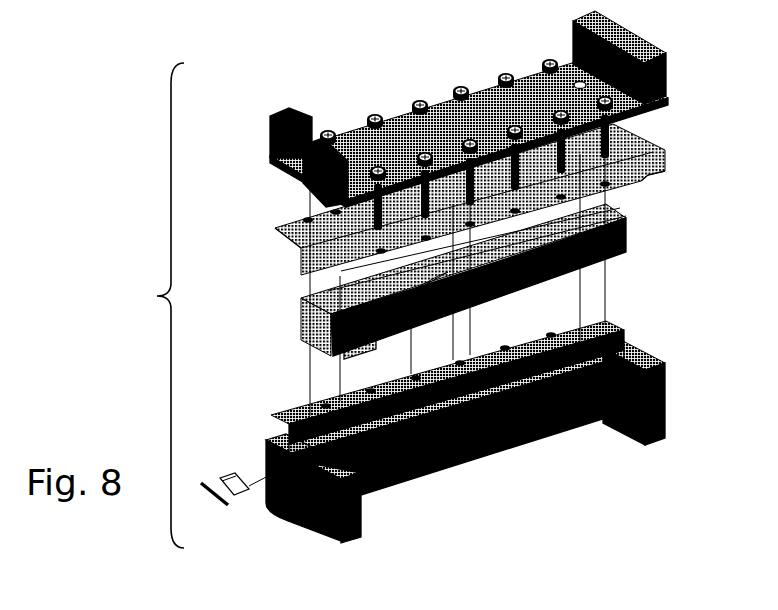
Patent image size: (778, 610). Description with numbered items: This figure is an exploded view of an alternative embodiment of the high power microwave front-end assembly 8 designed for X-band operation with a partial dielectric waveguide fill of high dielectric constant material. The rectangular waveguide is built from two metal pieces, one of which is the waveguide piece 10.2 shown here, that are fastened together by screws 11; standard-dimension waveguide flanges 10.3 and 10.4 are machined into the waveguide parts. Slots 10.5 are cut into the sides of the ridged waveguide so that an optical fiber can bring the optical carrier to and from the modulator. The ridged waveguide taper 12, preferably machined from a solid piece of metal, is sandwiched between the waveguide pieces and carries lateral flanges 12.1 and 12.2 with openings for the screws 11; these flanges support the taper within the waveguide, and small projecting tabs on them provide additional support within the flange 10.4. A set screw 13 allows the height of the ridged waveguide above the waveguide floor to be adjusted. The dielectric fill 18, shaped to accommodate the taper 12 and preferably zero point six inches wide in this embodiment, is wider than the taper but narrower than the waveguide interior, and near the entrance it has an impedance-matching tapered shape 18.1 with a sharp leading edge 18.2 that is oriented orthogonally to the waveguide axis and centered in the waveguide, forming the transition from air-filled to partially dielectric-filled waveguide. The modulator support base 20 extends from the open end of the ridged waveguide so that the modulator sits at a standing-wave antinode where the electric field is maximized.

The waveguide assembly 8 is at (158, 305).
The waveguide piece 10.2 is at (453, 456).
The waveguide flange 10.3 is at (262, 129).
The waveguide flange 10.4 is at (640, 44).
The slots 10.5 is at (380, 476).
The screws 11 is at (601, 127).
The ridged waveguide taper 12 is at (294, 259).
The lateral flange 12.1 is at (616, 160).
The lateral flange 12.2 is at (303, 214).
The set screw 13 is at (572, 72).
The dielectric fill 18 is at (296, 316).
The tapered shape 18.1 is at (598, 242).
The leading edge 18.2 is at (620, 213).
The modulator support base 20 is at (196, 488).